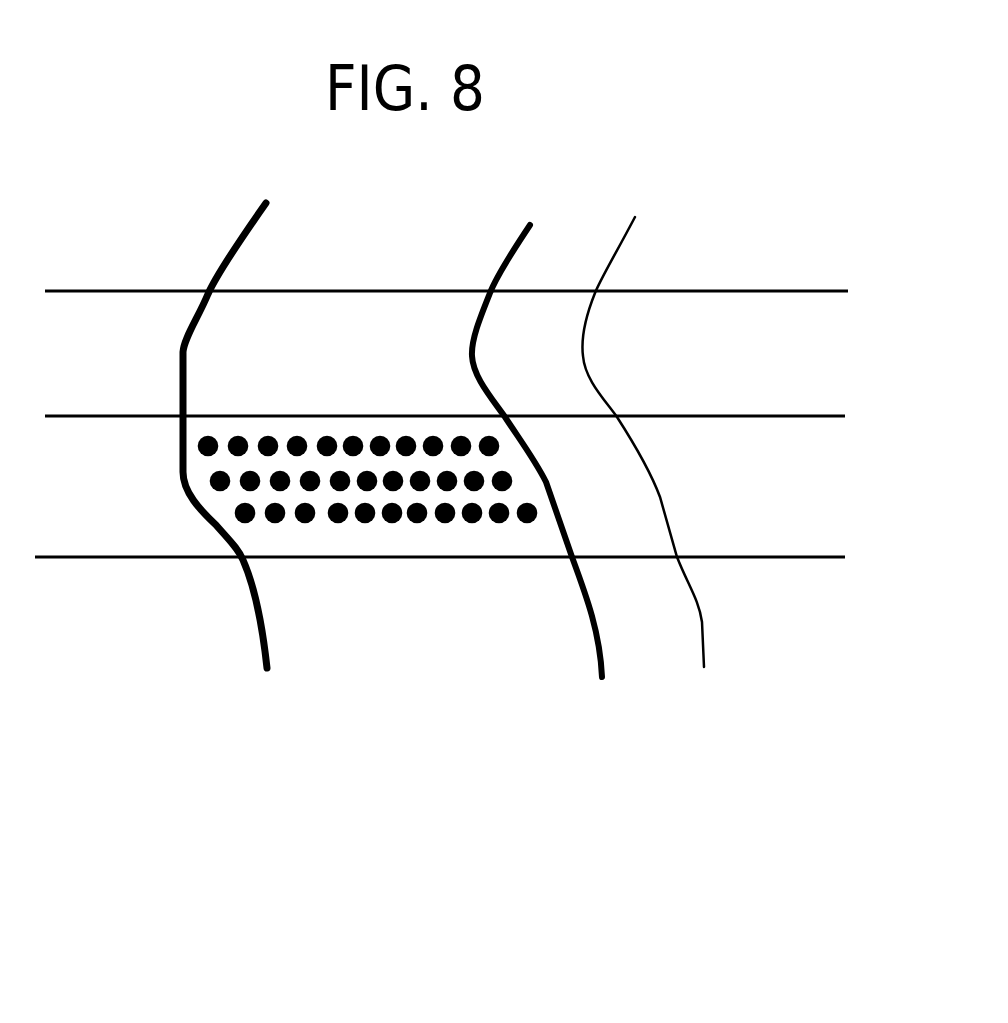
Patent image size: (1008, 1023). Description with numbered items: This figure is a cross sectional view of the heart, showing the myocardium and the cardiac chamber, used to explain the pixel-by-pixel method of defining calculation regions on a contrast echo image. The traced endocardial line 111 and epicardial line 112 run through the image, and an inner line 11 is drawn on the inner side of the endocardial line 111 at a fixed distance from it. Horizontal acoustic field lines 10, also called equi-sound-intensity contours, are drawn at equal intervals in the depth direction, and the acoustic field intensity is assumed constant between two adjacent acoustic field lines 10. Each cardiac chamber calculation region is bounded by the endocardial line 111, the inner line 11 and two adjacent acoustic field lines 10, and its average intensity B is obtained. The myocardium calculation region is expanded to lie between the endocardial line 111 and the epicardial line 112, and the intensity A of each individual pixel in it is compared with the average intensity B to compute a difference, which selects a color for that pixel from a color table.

The acoustic field lines 10 is at (469, 417).
The inner line 11 is at (650, 468).
The endocardial line 111 is at (550, 476).
The epicardial line 112 is at (236, 458).
The pixel intensity in myocardium calculation region A is at (365, 517).
The average intensity of cardiac chamber calculation region B is at (557, 418).